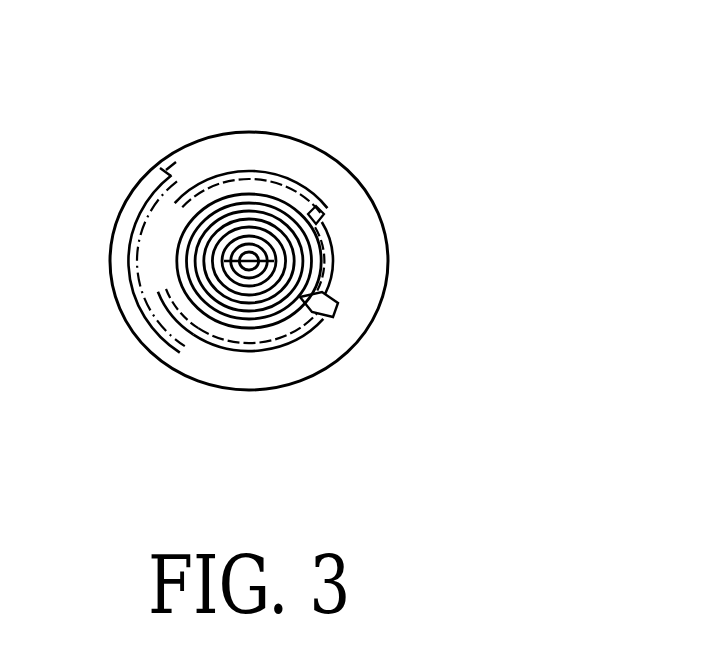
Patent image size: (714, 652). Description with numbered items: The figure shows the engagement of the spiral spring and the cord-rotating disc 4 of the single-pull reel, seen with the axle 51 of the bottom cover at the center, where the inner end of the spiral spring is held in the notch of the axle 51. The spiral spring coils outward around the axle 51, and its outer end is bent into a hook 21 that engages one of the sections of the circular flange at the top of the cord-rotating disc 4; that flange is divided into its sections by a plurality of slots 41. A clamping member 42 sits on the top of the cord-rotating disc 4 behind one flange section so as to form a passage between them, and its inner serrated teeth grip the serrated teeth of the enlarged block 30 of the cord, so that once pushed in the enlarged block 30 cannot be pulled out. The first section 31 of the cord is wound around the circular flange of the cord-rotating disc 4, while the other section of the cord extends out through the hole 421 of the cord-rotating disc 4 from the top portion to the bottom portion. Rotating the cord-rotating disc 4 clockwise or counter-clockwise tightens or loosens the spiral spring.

The cord-rotating disc 4 is at (340, 162).
The hook 21 is at (257, 205).
The enlarged block 30 is at (177, 311).
The first section 31 is at (162, 183).
The slots 41 is at (318, 210).
The clamping member 42 is at (270, 350).
The hole 421 is at (324, 313).
The axle 51 is at (248, 262).